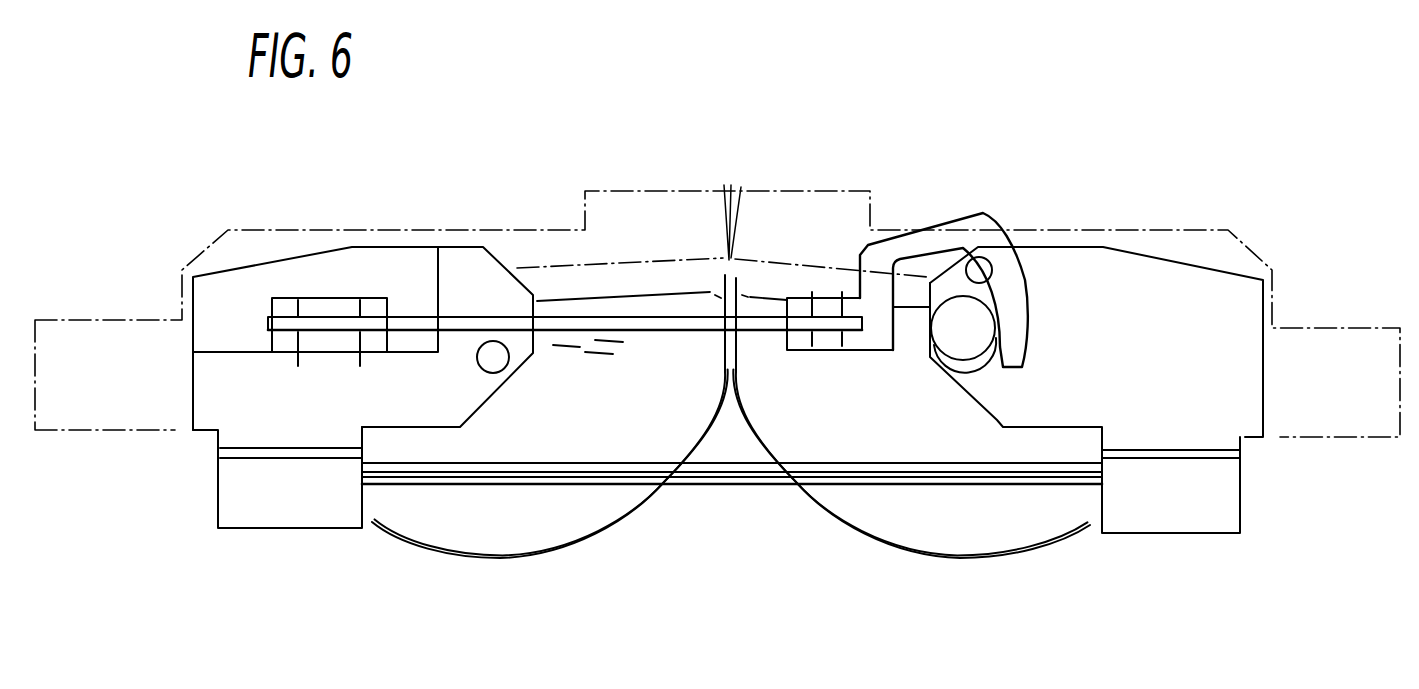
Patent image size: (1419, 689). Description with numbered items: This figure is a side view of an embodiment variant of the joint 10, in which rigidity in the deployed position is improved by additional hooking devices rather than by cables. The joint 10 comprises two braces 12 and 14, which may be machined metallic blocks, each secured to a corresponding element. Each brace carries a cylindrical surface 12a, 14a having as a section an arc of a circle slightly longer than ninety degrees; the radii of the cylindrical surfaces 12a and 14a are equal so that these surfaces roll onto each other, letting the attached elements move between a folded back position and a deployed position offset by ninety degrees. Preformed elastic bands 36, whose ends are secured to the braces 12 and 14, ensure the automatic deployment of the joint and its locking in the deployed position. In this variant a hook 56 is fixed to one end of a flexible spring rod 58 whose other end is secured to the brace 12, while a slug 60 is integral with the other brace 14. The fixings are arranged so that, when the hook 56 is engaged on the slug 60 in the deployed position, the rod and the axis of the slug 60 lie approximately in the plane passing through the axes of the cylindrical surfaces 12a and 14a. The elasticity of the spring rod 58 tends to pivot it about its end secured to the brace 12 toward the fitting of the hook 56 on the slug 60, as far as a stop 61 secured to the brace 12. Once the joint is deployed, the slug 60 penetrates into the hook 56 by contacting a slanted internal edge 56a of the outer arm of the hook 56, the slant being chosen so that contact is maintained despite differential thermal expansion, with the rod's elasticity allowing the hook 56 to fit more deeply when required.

The joint 10 is at (817, 152).
The brace 12 is at (485, 560).
The cylindrical surface 12a is at (600, 535).
The brace 14 is at (1060, 556).
The cylindrical surface 14a is at (866, 541).
The preformed elastic band 36 is at (704, 486).
The hook 56 is at (942, 226).
The slanted internal edge 56a is at (975, 250).
The flexible spring rod 58 is at (628, 323).
The slug 60 is at (990, 343).
The stop 61 is at (501, 366).